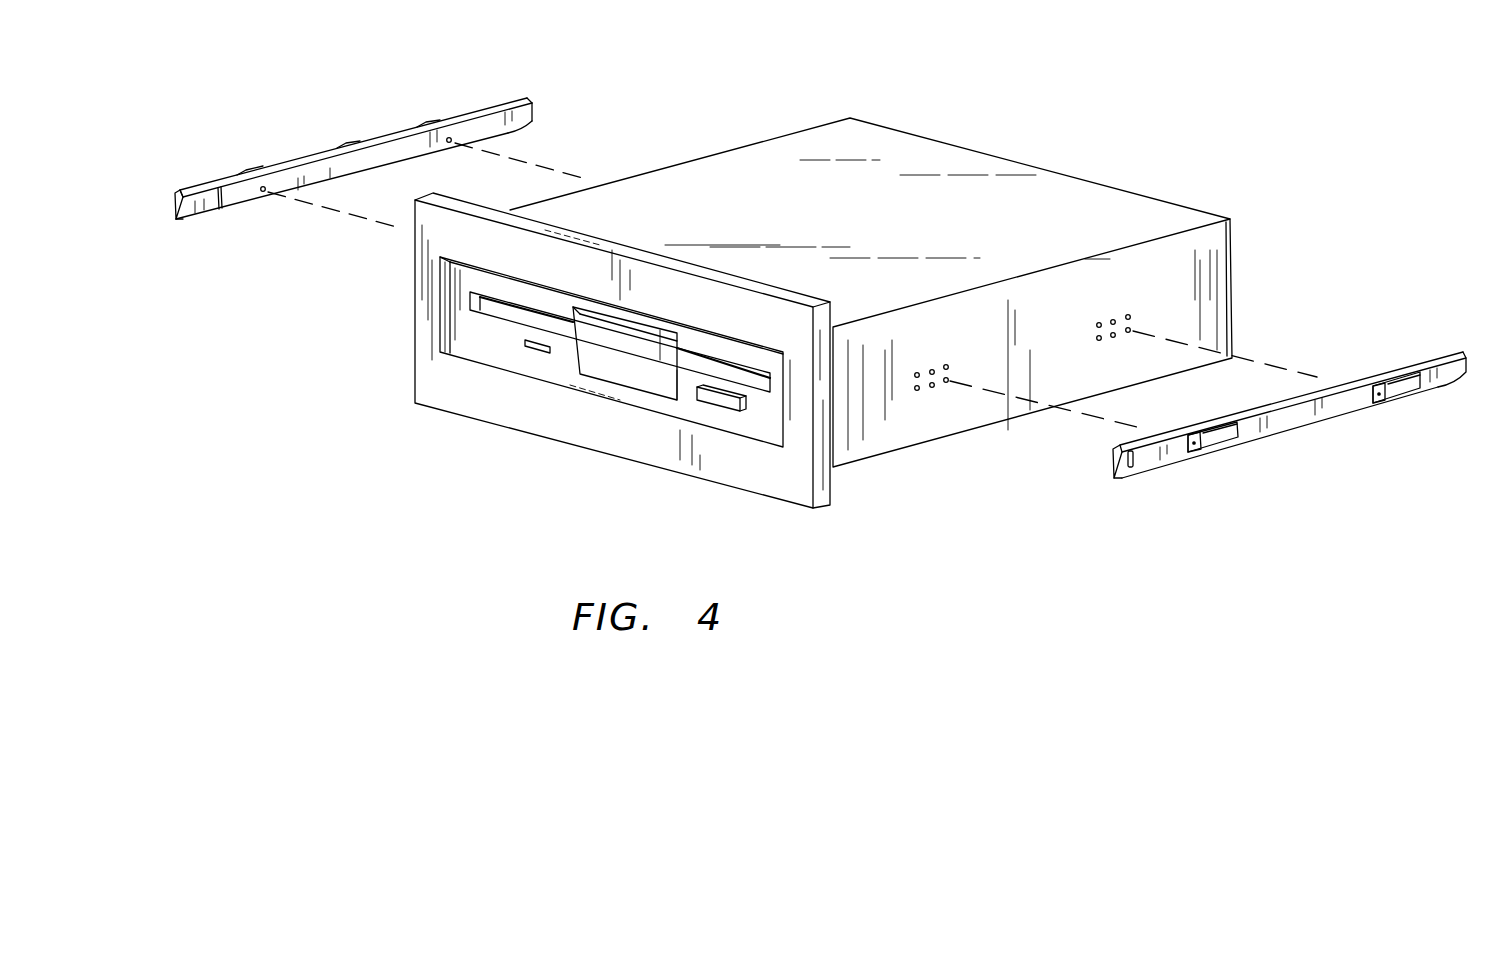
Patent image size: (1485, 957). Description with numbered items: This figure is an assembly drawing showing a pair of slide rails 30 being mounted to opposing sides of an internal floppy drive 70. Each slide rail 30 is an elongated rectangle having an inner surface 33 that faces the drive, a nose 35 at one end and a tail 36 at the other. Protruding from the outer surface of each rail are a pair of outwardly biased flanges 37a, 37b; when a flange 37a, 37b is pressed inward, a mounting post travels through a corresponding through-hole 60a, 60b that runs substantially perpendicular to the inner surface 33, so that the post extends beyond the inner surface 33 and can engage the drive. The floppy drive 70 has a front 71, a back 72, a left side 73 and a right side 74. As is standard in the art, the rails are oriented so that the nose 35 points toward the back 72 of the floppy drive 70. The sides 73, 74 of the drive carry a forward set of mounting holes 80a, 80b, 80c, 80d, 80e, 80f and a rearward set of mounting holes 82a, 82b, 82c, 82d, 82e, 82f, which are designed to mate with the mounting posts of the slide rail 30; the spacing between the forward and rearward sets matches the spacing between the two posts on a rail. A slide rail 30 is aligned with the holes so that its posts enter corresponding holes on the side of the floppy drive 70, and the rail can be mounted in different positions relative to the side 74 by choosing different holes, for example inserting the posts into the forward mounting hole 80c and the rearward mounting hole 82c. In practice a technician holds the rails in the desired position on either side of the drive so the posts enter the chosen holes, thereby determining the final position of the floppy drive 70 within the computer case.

The slide rail 30 is at (818, 309).
The inner surface 33 is at (480, 125).
The nose 35 is at (552, 94).
The tail 36 is at (181, 165).
The biased flange 37a is at (1210, 452).
The biased flange 37b is at (1397, 403).
The through-hole 60a is at (450, 143).
The through-hole 60b is at (264, 193).
The floppy drive 70 is at (866, 288).
The front 71 is at (593, 428).
The back 72 is at (1233, 291).
The left side 73 is at (816, 119).
The right side 74 is at (1197, 267).
The forward mounting hole 80a is at (916, 371).
The forward mounting hole 80b is at (931, 368).
The forward mounting hole 80c is at (947, 364).
The forward mounting hole 80d is at (917, 392).
The forward mounting hole 80e is at (933, 389).
The forward mounting hole 80f is at (948, 383).
The rearward mounting hole 82a is at (1099, 321).
The rearward mounting hole 82b is at (1113, 318).
The rearward mounting hole 82c is at (1128, 313).
The rearward mounting hole 82d is at (1097, 341).
The rearward mounting hole 82e is at (1113, 339).
The rearward mounting hole 82f is at (1131, 333).